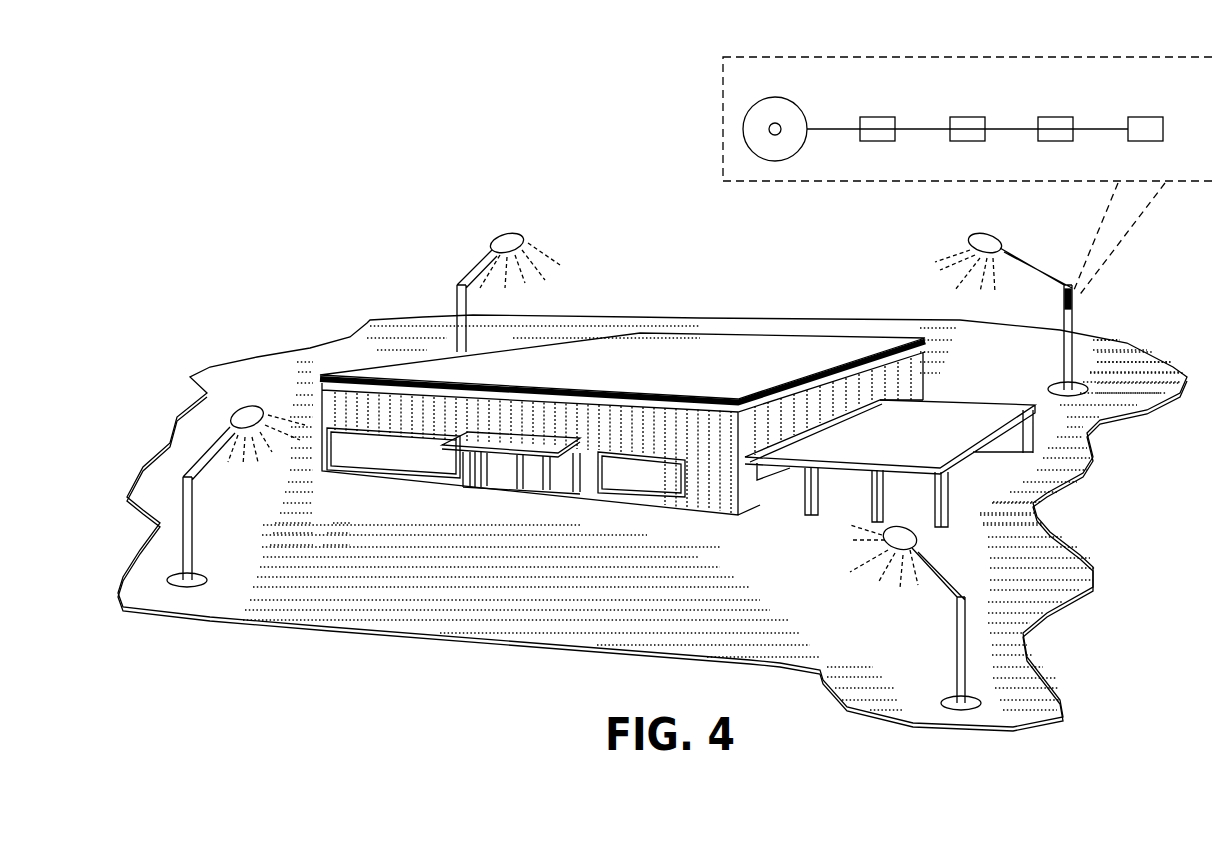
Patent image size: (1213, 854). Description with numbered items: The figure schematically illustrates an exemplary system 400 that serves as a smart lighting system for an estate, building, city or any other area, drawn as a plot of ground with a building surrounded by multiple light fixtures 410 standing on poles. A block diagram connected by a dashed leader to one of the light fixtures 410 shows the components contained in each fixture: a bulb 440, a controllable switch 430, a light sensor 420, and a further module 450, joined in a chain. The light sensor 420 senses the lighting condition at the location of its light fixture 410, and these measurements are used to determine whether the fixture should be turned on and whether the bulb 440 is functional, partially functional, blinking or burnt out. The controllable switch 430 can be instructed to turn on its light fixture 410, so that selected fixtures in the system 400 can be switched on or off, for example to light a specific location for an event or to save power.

The system 400 is at (296, 190).
The light fixture 410 is at (476, 268).
The light sensor 420 is at (975, 112).
The controllable switch 430 is at (889, 112).
The bulb 440 is at (802, 104).
The communication module 450 is at (1156, 112).